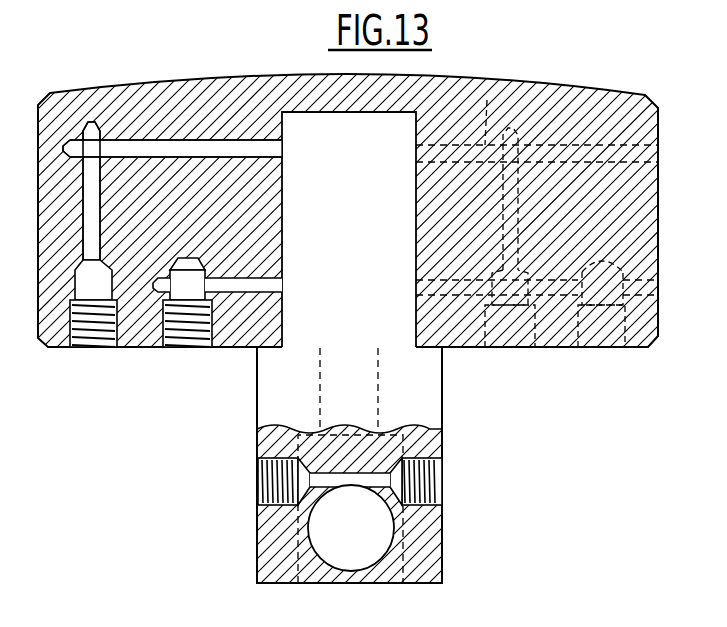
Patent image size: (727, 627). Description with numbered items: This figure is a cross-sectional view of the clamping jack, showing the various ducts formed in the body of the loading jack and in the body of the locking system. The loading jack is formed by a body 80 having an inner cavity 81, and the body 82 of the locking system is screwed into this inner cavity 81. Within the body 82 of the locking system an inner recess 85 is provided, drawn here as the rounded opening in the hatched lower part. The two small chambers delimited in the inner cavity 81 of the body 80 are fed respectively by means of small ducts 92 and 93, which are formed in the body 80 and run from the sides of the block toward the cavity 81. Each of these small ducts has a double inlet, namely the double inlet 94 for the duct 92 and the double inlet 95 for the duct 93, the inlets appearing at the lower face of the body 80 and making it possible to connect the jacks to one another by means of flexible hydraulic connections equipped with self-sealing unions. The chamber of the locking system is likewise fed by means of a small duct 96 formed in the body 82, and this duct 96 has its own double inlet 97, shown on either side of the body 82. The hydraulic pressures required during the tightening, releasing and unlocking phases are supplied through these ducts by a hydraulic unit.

The body 80 is at (573, 102).
The inner cavity 81 is at (322, 171).
The body of the locking system 82 is at (440, 532).
The inner recess 85 is at (308, 562).
The small duct 92 is at (163, 152).
The small duct 93 is at (283, 272).
The double inlet 94 is at (98, 337).
The double inlet 95 is at (195, 337).
The small duct 96 is at (329, 477).
The double inlet 97 is at (258, 475).